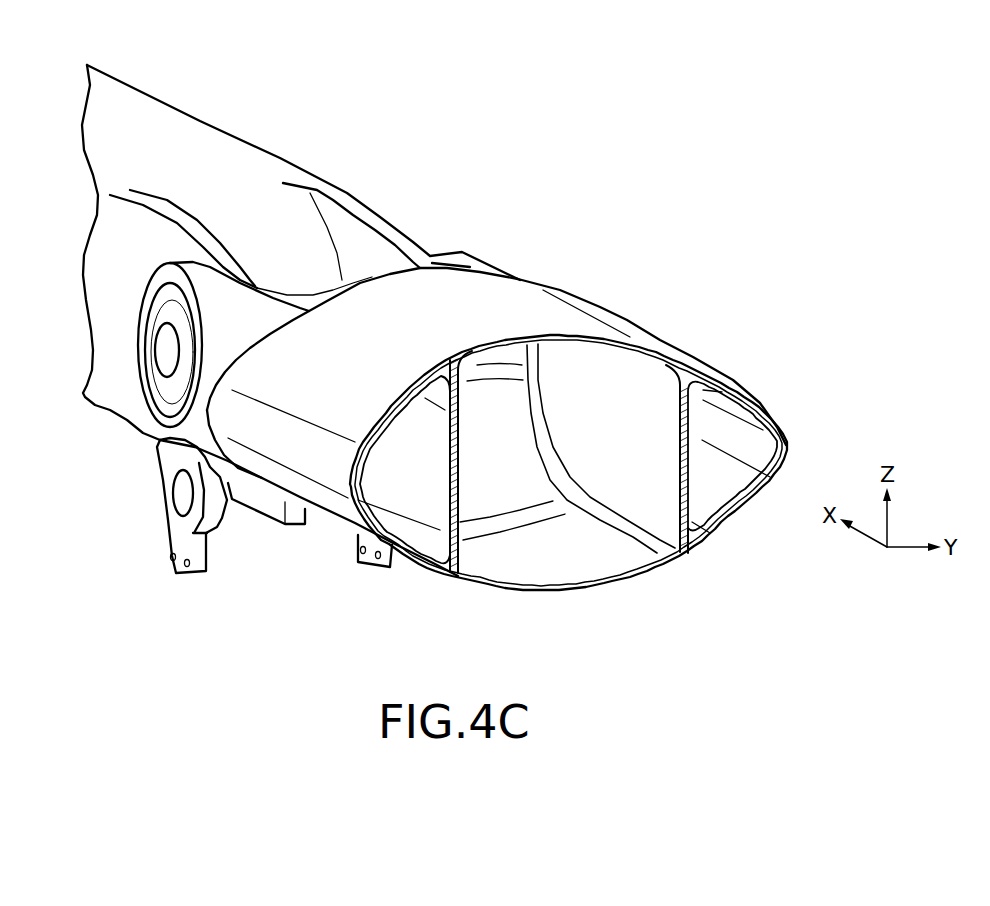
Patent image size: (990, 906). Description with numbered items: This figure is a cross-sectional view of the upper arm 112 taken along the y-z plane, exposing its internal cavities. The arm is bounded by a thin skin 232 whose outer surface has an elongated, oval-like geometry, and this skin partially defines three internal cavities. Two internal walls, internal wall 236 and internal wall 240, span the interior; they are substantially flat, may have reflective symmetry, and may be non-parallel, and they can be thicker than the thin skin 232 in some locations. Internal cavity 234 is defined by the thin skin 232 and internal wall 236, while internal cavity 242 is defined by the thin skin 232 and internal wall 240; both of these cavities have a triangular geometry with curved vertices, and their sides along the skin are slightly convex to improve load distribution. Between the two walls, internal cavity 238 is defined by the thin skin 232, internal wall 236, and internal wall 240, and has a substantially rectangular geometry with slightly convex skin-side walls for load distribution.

The upper arm 112 is at (751, 322).
The thin skin 232 is at (680, 556).
The internal cavity 234 is at (752, 441).
The internal wall 236 is at (683, 407).
The internal cavity 238 is at (588, 540).
The internal wall 240 is at (461, 438).
The internal cavity 242 is at (412, 488).